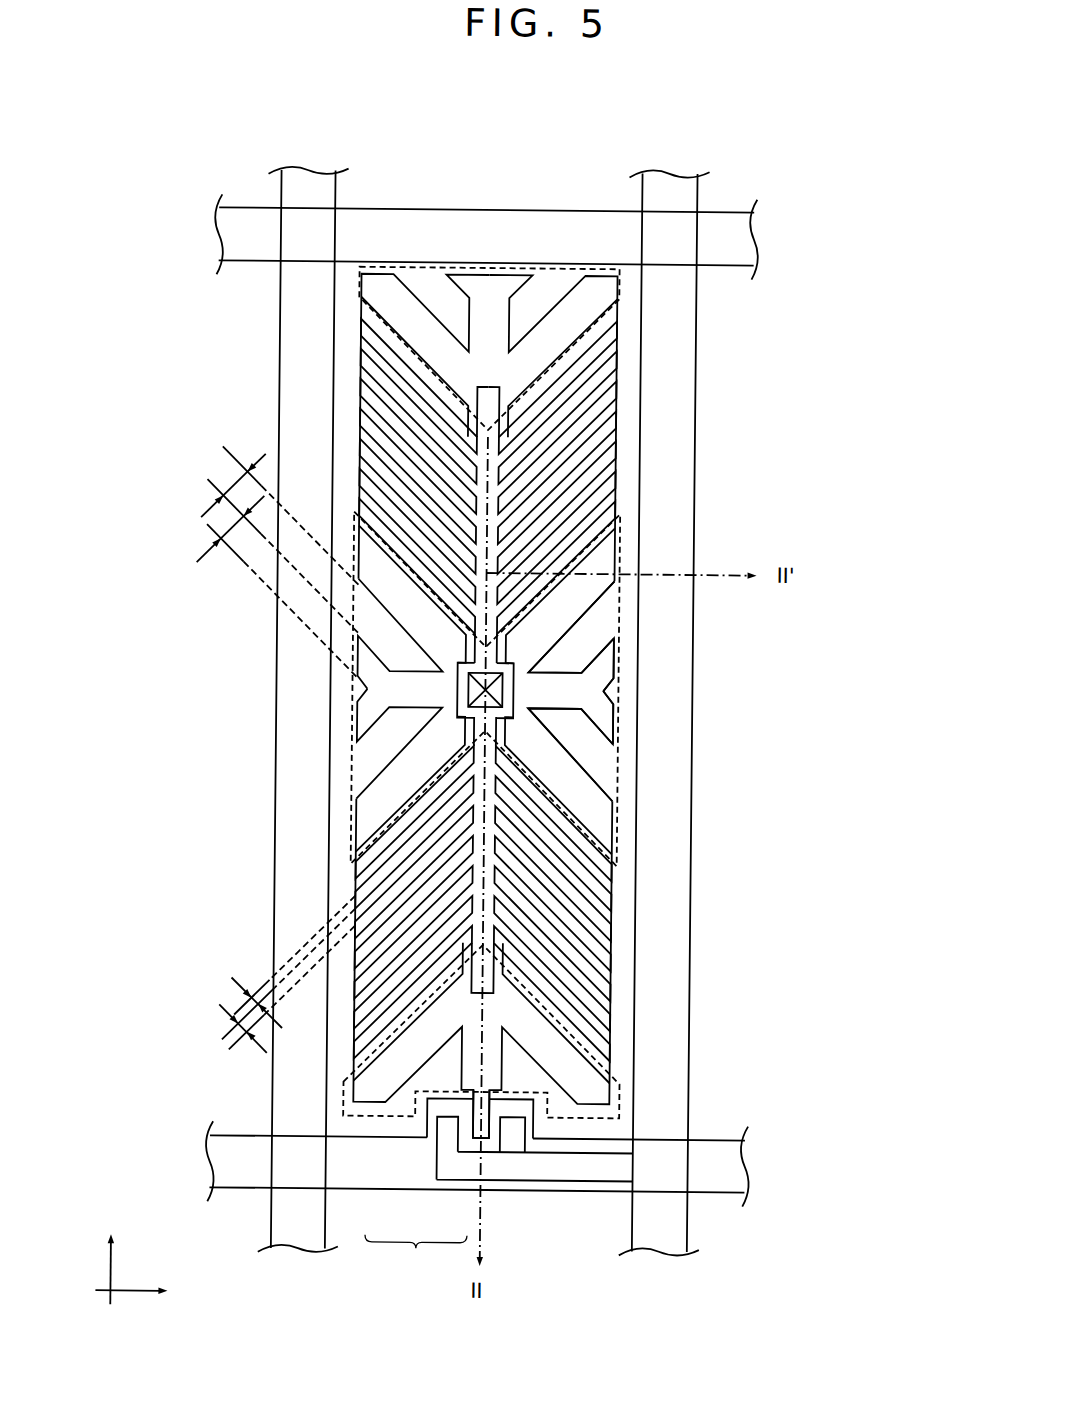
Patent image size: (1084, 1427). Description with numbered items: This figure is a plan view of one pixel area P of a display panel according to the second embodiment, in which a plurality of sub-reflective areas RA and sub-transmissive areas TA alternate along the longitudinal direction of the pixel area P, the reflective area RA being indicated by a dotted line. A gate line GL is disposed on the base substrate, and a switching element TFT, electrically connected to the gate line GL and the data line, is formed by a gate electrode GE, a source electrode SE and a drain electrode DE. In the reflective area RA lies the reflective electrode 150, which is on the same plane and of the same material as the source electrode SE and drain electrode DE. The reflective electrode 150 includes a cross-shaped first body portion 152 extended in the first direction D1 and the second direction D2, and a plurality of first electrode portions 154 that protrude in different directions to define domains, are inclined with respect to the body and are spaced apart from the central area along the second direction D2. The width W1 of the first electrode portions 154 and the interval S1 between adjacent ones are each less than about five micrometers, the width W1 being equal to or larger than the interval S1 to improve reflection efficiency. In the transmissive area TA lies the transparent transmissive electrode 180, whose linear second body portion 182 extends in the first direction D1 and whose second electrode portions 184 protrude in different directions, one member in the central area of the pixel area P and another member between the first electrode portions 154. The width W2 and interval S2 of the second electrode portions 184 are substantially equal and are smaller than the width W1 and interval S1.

The transmissive electrode 180 is at (785, 445).
The second body portion 182 is at (606, 494).
The second electrode portion 184 is at (606, 451).
The reflective electrode 150 is at (764, 678).
The first body portion 152 is at (600, 685).
The first electrode portion 154 is at (600, 793).
The pixel area P is at (428, 186).
The gate line GL is at (720, 1163).
The reflective area RA is at (620, 290).
The transmissive area TA is at (603, 410).
The switching element TFT is at (416, 1257).
The gate electrode GE is at (477, 1146).
The source electrode SE is at (457, 1131).
The drain electrode DE is at (477, 1142).
The interval between first electrode portions S1 is at (246, 470).
The width of first electrode portions W1 is at (233, 548).
The interval between second electrode portions S2 is at (251, 1042).
The width of second electrode portions W2 is at (268, 998).
The first direction D1 is at (157, 1290).
The second direction D2 is at (110, 1248).